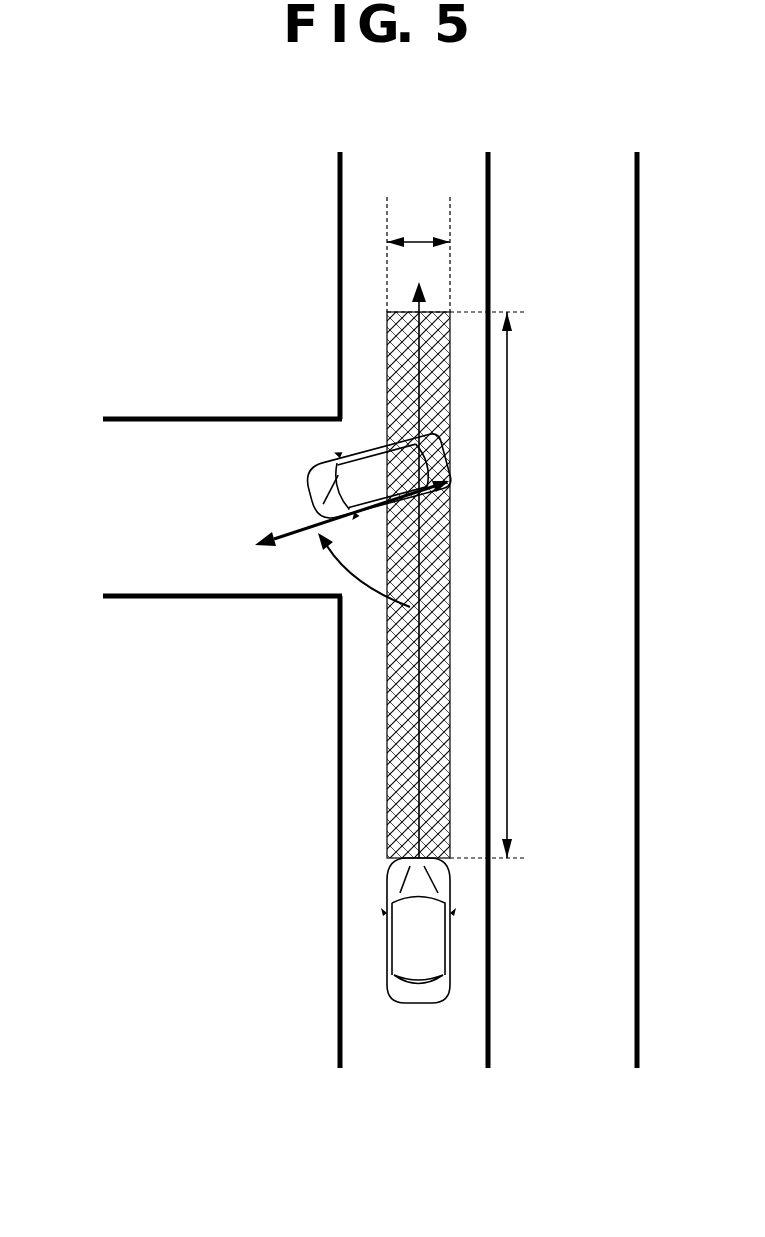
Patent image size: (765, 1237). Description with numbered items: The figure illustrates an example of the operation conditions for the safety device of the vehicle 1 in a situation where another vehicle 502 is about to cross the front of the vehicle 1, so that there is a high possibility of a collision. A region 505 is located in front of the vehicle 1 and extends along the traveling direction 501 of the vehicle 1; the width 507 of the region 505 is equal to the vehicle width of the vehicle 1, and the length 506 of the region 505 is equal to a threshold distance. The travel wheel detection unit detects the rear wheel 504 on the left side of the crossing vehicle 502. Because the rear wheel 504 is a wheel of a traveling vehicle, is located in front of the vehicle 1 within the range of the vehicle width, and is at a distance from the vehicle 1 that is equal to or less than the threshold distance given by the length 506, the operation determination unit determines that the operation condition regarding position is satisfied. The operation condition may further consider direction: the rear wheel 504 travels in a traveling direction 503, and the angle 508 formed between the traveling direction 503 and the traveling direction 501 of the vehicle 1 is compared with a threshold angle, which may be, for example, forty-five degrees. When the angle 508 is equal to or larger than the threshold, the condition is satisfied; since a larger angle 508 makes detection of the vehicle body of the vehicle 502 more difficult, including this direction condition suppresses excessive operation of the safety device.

The vehicle 1 is at (450, 937).
The traveling direction of the vehicle 501 is at (417, 780).
The vehicle 502 is at (320, 463).
The traveling direction 503 is at (285, 535).
The rear wheel 504 is at (448, 472).
The region 505 is at (400, 700).
The length 506 is at (507, 612).
The width 507 is at (418, 238).
The angle 508 is at (305, 592).